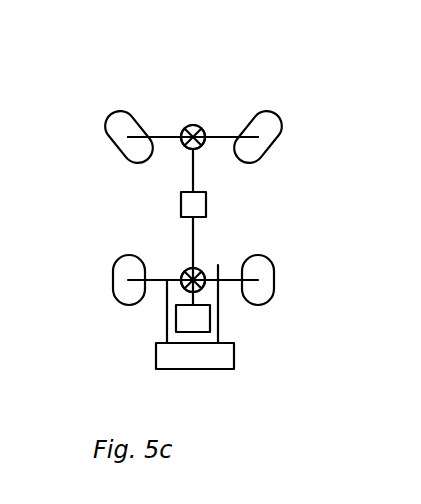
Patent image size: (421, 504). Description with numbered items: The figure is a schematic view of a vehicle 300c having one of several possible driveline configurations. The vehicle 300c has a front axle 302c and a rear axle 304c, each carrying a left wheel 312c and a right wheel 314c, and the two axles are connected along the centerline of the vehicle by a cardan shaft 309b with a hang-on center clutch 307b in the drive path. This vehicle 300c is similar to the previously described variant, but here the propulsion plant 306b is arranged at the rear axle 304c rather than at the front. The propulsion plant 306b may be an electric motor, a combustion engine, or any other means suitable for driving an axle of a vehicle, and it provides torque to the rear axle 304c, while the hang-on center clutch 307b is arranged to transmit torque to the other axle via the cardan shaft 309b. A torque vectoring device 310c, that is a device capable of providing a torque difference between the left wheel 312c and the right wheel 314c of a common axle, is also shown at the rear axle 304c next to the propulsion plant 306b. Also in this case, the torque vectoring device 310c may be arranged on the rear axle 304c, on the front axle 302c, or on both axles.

The vehicle 300c is at (182, 98).
The front axle 302c is at (223, 140).
The rear axle 304c is at (218, 265).
The propulsion plant 306b is at (211, 315).
The hang-on center clutch 307b is at (181, 218).
The cardan shaft 309b is at (193, 158).
The torque vectoring device 310c is at (152, 342).
The left wheel 312c is at (115, 135).
The right wheel 314c is at (272, 130).